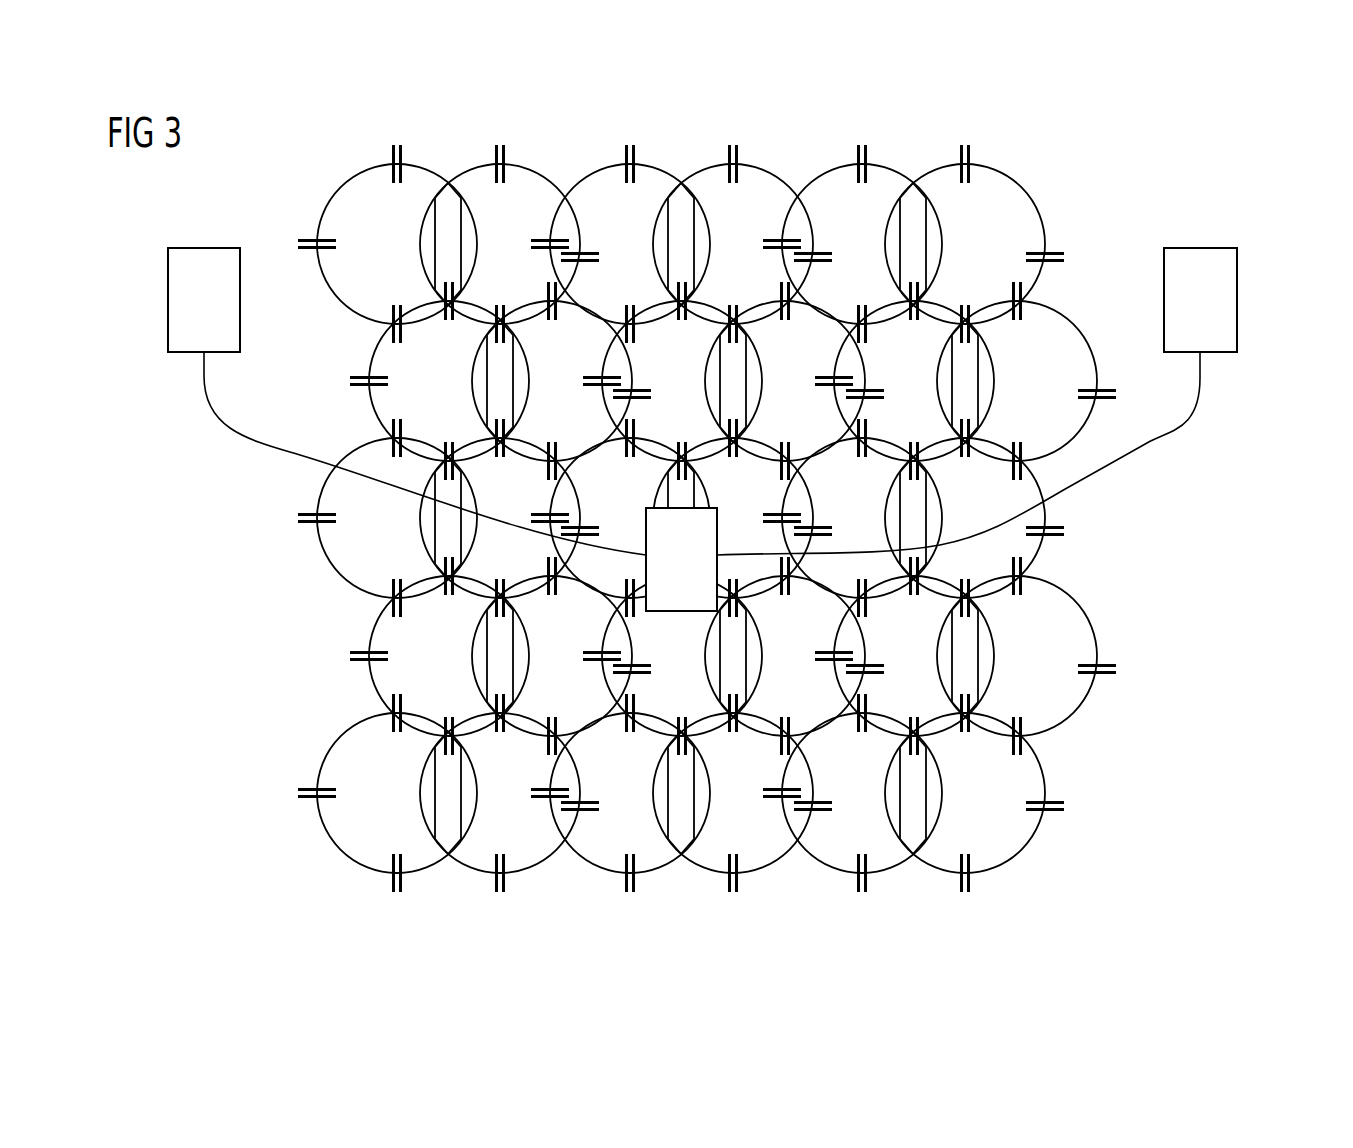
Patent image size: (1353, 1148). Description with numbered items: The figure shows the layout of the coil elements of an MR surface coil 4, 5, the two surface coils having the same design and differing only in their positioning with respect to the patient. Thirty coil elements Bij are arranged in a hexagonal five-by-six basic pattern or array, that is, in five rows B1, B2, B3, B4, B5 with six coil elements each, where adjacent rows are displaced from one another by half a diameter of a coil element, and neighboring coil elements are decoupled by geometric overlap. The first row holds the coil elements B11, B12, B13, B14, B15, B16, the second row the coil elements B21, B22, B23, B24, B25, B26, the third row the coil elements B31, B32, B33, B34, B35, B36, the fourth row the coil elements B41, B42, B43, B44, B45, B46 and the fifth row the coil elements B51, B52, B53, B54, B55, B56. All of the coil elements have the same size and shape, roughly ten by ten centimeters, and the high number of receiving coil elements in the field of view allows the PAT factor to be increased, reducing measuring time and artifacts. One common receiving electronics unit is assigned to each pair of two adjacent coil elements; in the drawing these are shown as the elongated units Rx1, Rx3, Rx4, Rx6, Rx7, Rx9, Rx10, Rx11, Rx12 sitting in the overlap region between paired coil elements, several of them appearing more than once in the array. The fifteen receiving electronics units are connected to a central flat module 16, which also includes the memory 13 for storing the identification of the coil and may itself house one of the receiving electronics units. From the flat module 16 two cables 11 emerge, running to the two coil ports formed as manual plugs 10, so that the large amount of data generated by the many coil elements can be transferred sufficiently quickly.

The MR surface coil 4 is at (650, 508).
The MR surface coil 5 is at (205, 682).
The manual plug 10 is at (168, 297).
The cable 11 is at (267, 448).
The memory 13 is at (712, 577).
The flat module 16 is at (681, 559).
The row of coil elements B1 is at (1080, 214).
The row of coil elements B2 is at (1088, 308).
The row of coil elements B3 is at (1088, 553).
The row of coil elements B4 is at (1103, 712).
The row of coil elements B5 is at (1065, 858).
The coil element Bij is at (1023, 188).
The coil element B11 is at (387, 244).
The coil element B12 is at (509, 244).
The coil element B13 is at (620, 244).
The coil element B14 is at (742, 244).
The coil element B15 is at (852, 244).
The coil element B16 is at (974, 244).
The coil element B21 is at (439, 381).
The coil element B22 is at (561, 381).
The coil element B23 is at (672, 381).
The coil element B24 is at (794, 381).
The coil element B25 is at (904, 381).
The coil element B26 is at (1026, 381).
The coil element B31 is at (387, 518).
The coil element B32 is at (509, 518).
The coil element B33 is at (620, 518).
The coil element B34 is at (742, 518).
The coil element B35 is at (852, 518).
The coil element B36 is at (974, 518).
The coil element B41 is at (439, 656).
The coil element B42 is at (561, 656).
The coil element B43 is at (672, 656).
The coil element B44 is at (794, 656).
The coil element B45 is at (904, 656).
The coil element B46 is at (1026, 656).
The coil element B51 is at (387, 793).
The coil element B52 is at (509, 793).
The coil element B53 is at (620, 793).
The coil element B54 is at (742, 793).
The coil element B55 is at (852, 793).
The coil element B56 is at (974, 793).
The receiving electronics unit Rx1 is at (497, 358).
The receiving electronics unit Rx3 is at (448, 203).
The receiving electronics unit Rx4 is at (972, 360).
The receiving electronics unit Rx6 is at (681, 203).
The receiving electronics unit Rx7 is at (919, 495).
The receiving electronics unit Rx9 is at (737, 631).
The receiving electronics unit Rx10 is at (497, 633).
The receiving electronics unit Rx11 is at (447, 820).
The receiving electronics unit Rx12 is at (686, 770).